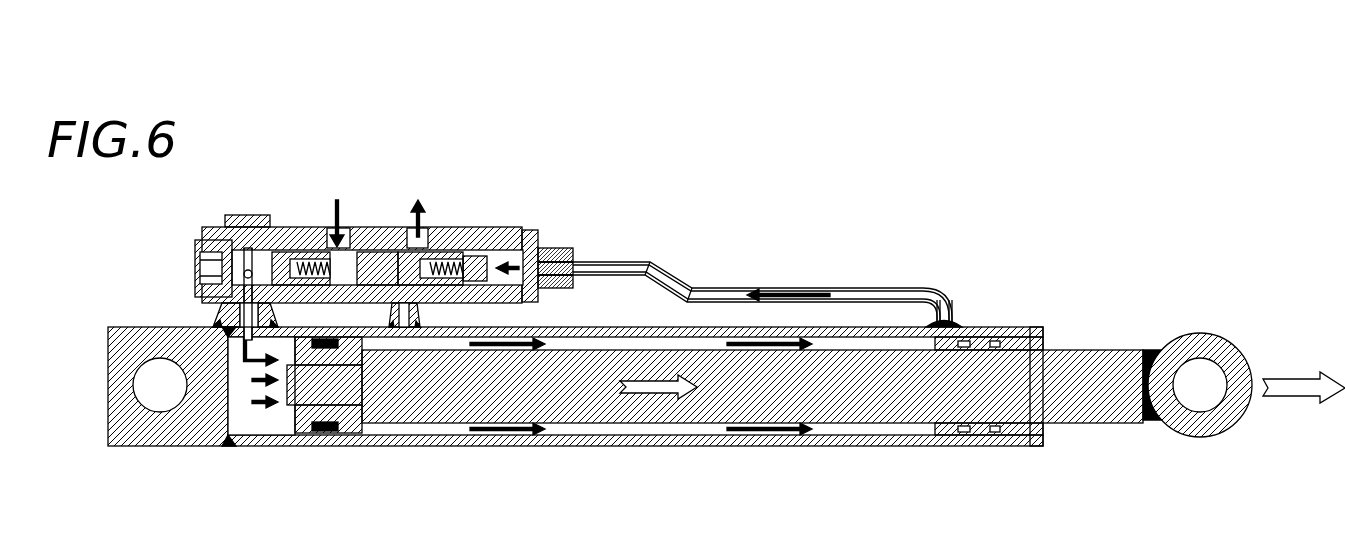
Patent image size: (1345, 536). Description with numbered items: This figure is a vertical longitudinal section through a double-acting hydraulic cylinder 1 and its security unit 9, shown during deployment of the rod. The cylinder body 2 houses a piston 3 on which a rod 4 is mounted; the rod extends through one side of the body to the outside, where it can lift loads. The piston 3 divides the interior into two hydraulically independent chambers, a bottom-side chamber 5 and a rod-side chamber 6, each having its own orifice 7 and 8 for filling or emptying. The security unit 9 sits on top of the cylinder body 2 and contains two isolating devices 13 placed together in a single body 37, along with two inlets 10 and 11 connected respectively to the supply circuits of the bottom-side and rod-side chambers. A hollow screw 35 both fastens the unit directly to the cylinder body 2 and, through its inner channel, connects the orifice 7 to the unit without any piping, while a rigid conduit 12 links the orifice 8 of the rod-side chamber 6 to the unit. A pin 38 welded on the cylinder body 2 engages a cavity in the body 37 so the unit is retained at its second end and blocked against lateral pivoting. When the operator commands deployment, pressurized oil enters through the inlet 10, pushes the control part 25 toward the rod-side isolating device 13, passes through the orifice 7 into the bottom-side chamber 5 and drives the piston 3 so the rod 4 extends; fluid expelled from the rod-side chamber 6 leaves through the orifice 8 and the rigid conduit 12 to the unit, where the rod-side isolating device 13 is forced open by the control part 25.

The cylinder 1 is at (726, 388).
The cylinder body 2 is at (840, 440).
The piston 3 is at (307, 418).
The rod 4 is at (1097, 370).
The bottom-side chamber 5 is at (248, 418).
The rod-side chamber 6 is at (625, 427).
The orifice 7 is at (225, 345).
The orifice 8 is at (951, 310).
The security unit 9 is at (367, 240).
The inlet 10 is at (323, 228).
The inlet 11 is at (428, 237).
The rigid conduit 12 is at (717, 295).
The isolating device 13 is at (289, 228).
The control part 25 is at (373, 230).
The hollow screw 35 is at (241, 225).
The body 37 is at (512, 228).
The pin 38 is at (420, 317).